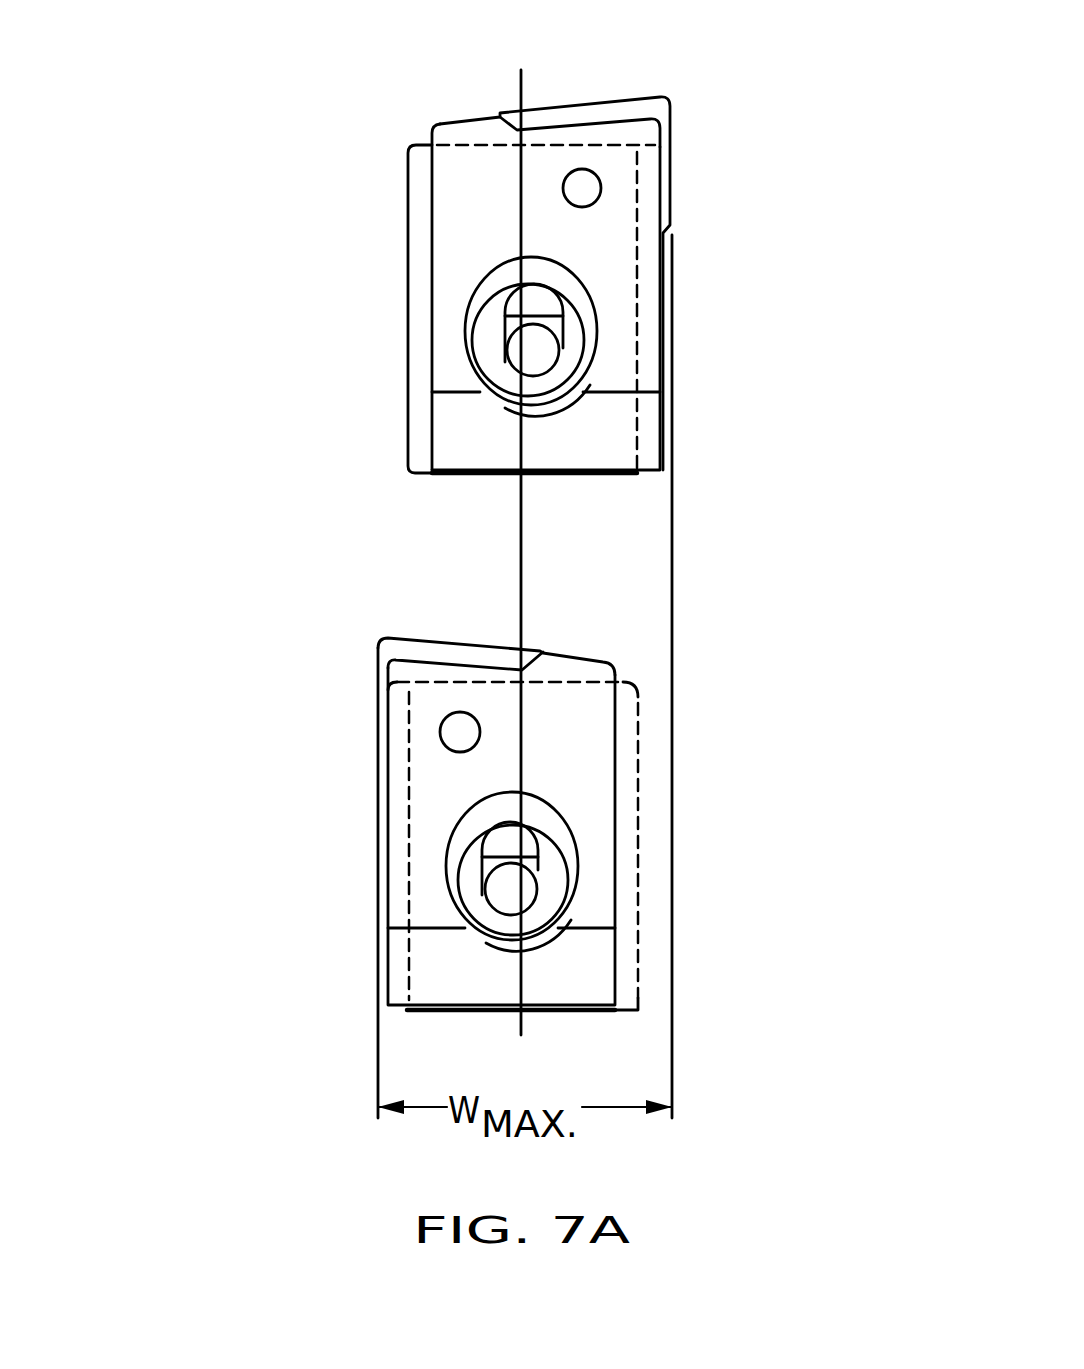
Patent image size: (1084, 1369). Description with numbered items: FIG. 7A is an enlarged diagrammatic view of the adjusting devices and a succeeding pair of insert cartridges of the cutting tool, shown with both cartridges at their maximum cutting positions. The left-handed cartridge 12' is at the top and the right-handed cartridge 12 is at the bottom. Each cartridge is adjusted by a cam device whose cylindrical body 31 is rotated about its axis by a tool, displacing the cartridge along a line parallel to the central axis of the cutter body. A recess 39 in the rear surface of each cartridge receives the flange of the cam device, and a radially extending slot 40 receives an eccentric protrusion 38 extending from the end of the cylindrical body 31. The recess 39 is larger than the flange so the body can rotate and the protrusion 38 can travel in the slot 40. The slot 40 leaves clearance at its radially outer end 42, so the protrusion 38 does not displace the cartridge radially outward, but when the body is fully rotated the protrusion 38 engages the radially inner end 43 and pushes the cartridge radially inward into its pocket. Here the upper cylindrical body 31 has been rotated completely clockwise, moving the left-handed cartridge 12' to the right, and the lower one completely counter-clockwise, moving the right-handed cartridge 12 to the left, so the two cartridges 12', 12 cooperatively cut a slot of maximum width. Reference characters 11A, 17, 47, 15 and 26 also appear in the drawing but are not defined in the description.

The left-handed cartridge 12' is at (493, 262).
The cartridge 12 is at (565, 813).
The key housing / cover plate 11A is at (762, 678).
The cover cap 17 is at (631, 36).
The pivot hole 47 is at (571, 176).
The recess 39 is at (557, 273).
The radially extending slot 40 is at (588, 308).
The eccentric protrusion 38 is at (565, 317).
The cylindrical body 31 is at (780, 930).
The radially outer end 42 is at (495, 310).
The radially inner end 43 is at (560, 354).
The housing bottom edge 15 is at (310, 420).
The key bottom edge 26 is at (613, 475).